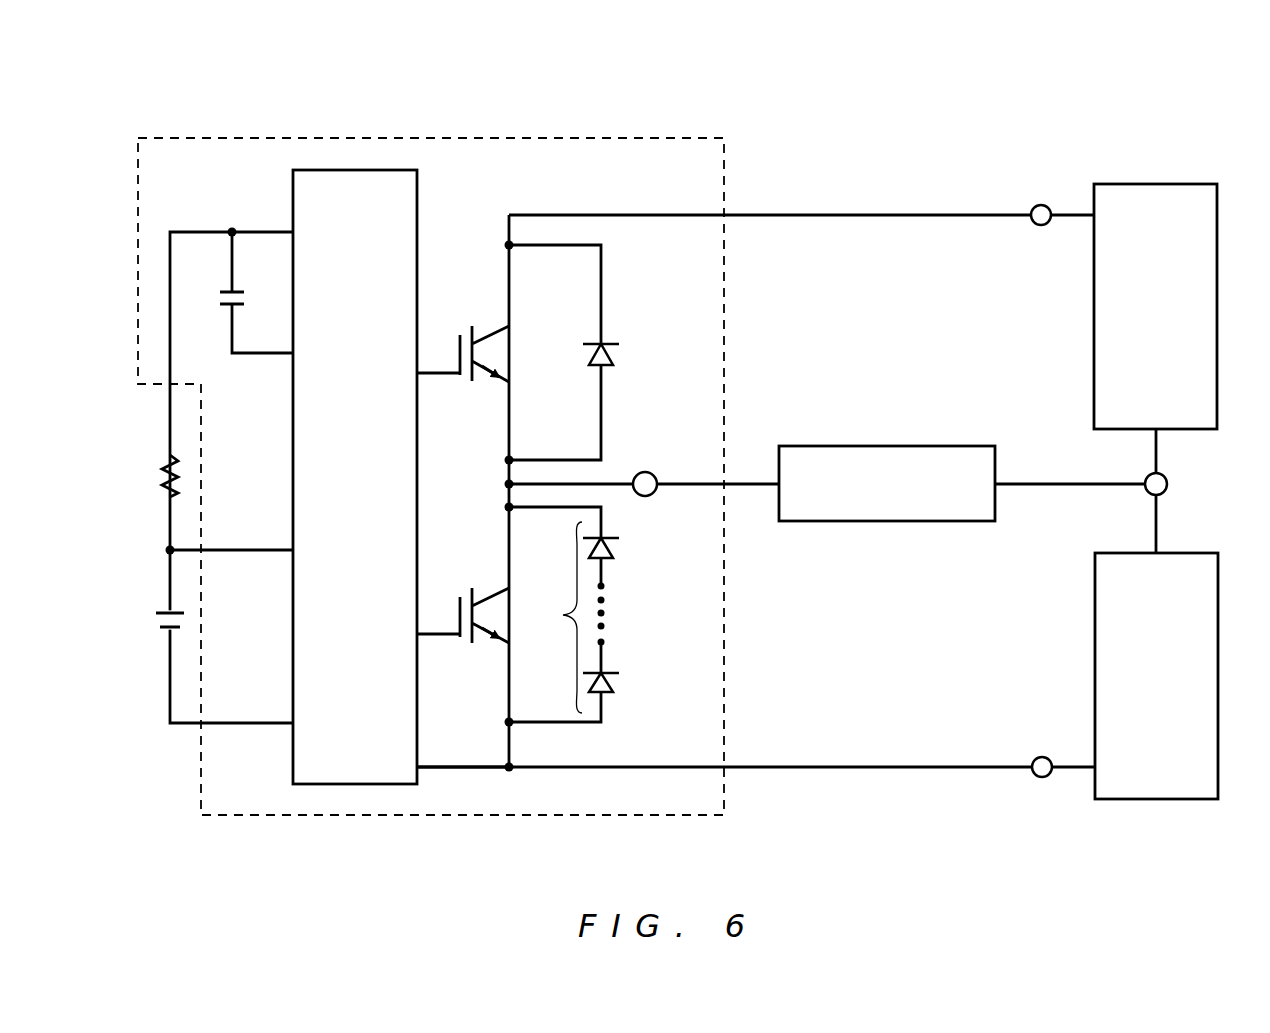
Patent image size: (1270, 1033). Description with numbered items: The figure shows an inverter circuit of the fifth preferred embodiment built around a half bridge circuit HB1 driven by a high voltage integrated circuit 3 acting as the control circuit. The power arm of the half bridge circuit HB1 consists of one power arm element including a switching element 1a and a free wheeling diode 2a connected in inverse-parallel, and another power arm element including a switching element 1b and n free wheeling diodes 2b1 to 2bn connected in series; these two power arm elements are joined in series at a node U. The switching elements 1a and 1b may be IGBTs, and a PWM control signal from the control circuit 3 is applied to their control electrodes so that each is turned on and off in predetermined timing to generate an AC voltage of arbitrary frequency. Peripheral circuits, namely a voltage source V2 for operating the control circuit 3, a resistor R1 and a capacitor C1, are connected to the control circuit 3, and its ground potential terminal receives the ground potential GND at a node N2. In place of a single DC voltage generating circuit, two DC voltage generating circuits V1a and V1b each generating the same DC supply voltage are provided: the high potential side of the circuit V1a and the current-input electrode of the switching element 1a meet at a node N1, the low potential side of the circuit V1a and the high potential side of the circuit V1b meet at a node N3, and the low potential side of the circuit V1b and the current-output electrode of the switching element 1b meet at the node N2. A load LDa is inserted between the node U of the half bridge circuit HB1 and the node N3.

The half bridge circuit HB1 is at (487, 137).
The HVIC 3 is at (355, 170).
The switching element 1a is at (467, 325).
The switching element 1b is at (467, 586).
The free wheeling diode 2a is at (622, 353).
The free wheeling diode 2b1 is at (615, 548).
The free wheeling diode 2bn is at (615, 683).
The number of free wheeling diodes n is at (559, 617).
The capacitor C1 is at (256, 292).
The resistor R1 is at (148, 476).
The voltage source V2 is at (148, 625).
The node U is at (642, 470).
The ground potential GND is at (463, 753).
The node N1 is at (1040, 201).
The node N2 is at (1040, 785).
The node N3 is at (1105, 491).
The load LDa is at (887, 521).
The DC voltage generating circuit V1a is at (1158, 184).
The DC voltage generating circuit V1b is at (1157, 799).